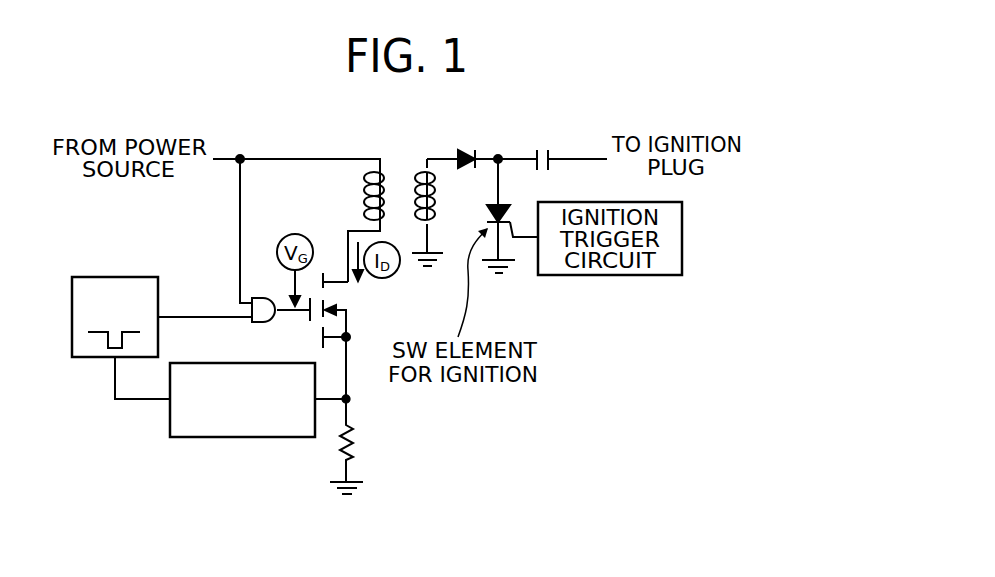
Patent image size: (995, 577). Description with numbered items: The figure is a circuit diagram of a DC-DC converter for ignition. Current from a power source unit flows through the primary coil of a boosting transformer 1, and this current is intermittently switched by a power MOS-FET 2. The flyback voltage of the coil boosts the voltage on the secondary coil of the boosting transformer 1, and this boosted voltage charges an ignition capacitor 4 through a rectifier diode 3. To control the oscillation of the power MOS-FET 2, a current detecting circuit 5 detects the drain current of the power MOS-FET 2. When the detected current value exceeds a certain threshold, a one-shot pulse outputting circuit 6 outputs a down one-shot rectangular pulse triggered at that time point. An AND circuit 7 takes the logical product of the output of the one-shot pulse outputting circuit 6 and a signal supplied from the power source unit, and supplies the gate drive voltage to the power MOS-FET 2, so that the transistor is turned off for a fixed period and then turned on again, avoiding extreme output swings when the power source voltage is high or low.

The boosting transformer 1 is at (398, 170).
The power MOS-FET 2 is at (353, 312).
The rectifier diode 3 is at (470, 148).
The ignition capacitor 4 is at (545, 148).
The current detecting circuit 5 is at (280, 440).
The one-shot pulse outputting circuit 6 is at (98, 276).
The AND circuit 7 is at (265, 295).